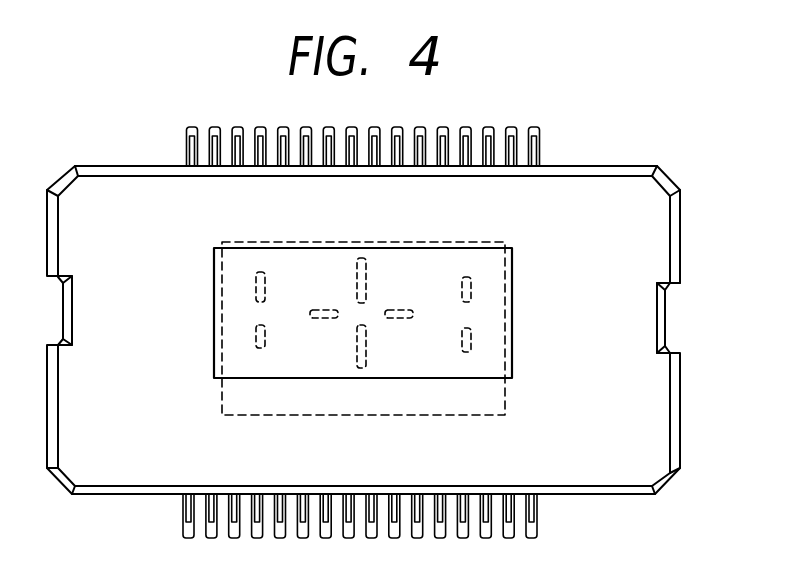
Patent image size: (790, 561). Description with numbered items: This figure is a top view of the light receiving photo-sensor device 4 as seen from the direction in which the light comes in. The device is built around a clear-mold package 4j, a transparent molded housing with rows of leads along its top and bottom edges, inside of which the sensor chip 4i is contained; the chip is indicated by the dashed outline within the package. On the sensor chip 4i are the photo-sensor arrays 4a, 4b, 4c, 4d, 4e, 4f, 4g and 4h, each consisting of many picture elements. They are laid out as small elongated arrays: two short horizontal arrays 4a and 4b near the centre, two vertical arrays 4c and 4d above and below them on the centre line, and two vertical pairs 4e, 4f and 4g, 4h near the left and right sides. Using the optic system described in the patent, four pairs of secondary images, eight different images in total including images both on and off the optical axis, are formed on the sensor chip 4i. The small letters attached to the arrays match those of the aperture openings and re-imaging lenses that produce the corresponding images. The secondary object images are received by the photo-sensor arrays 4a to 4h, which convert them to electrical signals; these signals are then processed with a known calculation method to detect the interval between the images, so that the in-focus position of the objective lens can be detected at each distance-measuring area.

The photo-sensor device 4 is at (660, 197).
The photo-sensor array 4a is at (400, 318).
The photo-sensor array 4b is at (322, 318).
The photo-sensor array 4c is at (362, 258).
The photo-sensor array 4d is at (361, 368).
The photo-sensor array 4e is at (256, 285).
The photo-sensor array 4f is at (256, 333).
The photo-sensor array 4g is at (471, 290).
The photo-sensor array 4h is at (471, 342).
The sensor chip 4i is at (455, 243).
The clear-mold package 4j is at (660, 254).